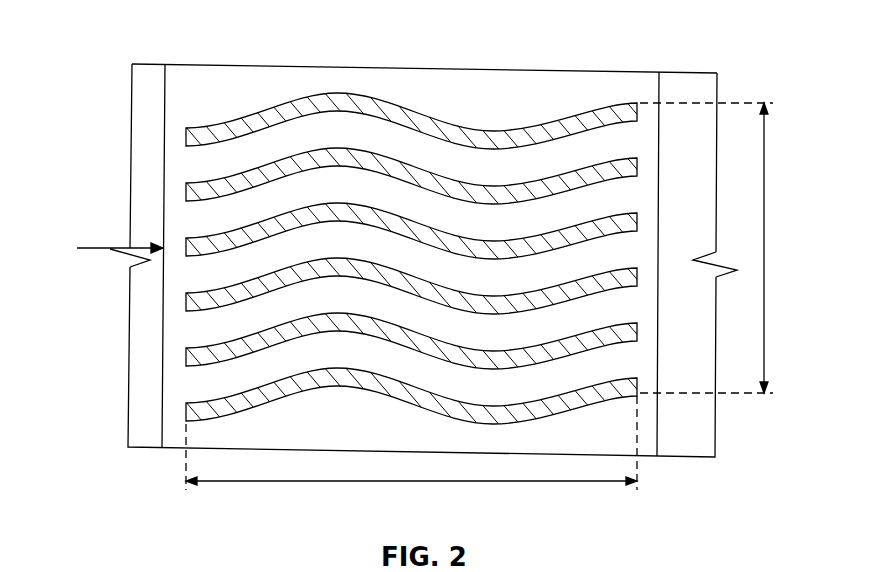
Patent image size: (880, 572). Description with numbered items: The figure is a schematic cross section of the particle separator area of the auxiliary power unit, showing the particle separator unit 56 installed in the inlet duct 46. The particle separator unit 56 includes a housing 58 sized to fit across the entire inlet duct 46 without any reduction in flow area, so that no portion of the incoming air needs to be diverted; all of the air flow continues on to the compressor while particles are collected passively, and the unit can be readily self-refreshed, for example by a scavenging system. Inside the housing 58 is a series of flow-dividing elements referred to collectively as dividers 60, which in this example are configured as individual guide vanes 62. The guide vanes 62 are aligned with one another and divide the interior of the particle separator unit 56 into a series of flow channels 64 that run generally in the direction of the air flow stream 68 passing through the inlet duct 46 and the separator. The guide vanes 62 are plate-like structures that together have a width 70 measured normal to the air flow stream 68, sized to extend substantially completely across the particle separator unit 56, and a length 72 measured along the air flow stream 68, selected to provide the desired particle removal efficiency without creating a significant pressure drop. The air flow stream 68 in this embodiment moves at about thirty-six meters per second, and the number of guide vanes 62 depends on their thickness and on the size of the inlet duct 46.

The inlet duct 46 is at (143, 447).
The particle separator unit 56 is at (260, 40).
The housing 58 is at (563, 72).
The dividers 60 is at (186, 357).
The guide vanes 62 is at (640, 222).
The flow channels 64 is at (635, 316).
The air flow stream 68 is at (88, 247).
The width 70 is at (766, 251).
The length 72 is at (412, 483).